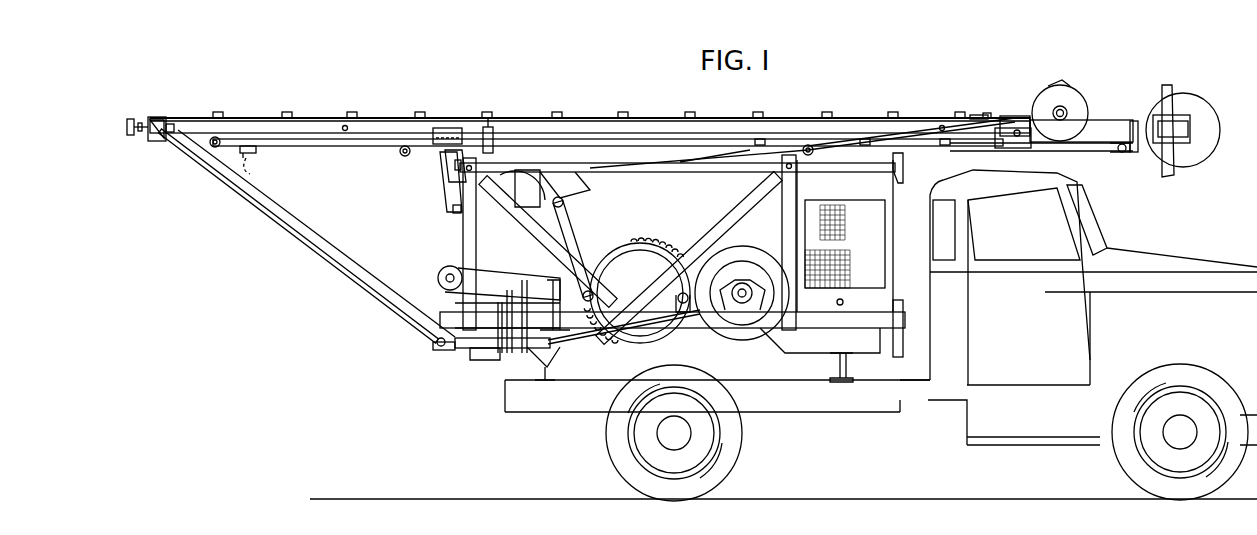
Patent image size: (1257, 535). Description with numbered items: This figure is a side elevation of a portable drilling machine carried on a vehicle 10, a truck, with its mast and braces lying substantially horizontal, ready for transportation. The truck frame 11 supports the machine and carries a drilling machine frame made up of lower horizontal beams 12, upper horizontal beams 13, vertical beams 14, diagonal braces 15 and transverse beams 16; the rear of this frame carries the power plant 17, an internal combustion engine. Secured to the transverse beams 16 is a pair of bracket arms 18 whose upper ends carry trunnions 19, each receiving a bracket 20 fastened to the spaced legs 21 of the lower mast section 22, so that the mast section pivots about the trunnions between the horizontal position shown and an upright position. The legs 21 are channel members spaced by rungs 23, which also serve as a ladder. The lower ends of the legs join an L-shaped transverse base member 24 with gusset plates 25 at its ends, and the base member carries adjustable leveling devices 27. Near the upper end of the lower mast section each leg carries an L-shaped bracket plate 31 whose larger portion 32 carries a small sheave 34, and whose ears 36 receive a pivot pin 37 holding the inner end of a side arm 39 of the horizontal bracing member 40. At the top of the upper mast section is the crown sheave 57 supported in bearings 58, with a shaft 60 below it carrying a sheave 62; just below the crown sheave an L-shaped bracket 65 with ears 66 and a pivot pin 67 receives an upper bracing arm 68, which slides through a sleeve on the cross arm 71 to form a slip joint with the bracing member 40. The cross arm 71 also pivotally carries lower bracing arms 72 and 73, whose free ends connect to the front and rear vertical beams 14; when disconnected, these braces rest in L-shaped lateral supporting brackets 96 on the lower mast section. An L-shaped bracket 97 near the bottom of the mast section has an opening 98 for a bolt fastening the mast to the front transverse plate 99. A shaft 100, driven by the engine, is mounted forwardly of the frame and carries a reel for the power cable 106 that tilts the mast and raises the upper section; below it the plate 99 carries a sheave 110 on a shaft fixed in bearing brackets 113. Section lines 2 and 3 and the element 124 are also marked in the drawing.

The section line 2- 2 is at (420, 282).
The section line 3- 3 is at (402, 350).
The vehicle 10 is at (1160, 258).
The frame 11 is at (880, 377).
The lower horizontal beams 12 is at (690, 328).
The upper horizontal beams 13 is at (672, 173).
The vertical beams 14 is at (475, 238).
The diagonal braces 15 is at (535, 236).
The transverse beams 16 is at (455, 168).
The power plant 17 is at (880, 216).
The bracket arms 18 is at (448, 186).
The trunnions 19 is at (447, 158).
The bracket 20 is at (450, 130).
The legs 21 is at (386, 128).
The lower mast section 22 is at (338, 118).
The rungs 23 is at (561, 112).
The base member 24 is at (149, 138).
The gusset plates 25 is at (160, 118).
The adjustable leveling devices 27 is at (134, 121).
The bracket arm or plate 31 is at (1005, 116).
The portion 32 is at (994, 112).
The small sheave 34 is at (980, 115).
The ears 36 is at (1017, 138).
The pivot pin or bolt 37 is at (1012, 142).
The side arms 39 is at (866, 140).
The horizontal bracing member 40 is at (898, 134).
The crown sheave 57 is at (1210, 118).
The bearings 58 is at (1185, 110).
The shaft 60 is at (1056, 108).
The sheave 62 is at (1070, 96).
The bracket or plate 65 is at (1135, 153).
The ears 66 is at (1120, 153).
The pivot pin 67 is at (1115, 152).
The upper bracing arms 68 is at (1074, 152).
The cross arm 71 is at (810, 145).
The lower bracing arms 72 is at (408, 156).
The lower bracing arms 73 is at (336, 147).
The lateral supporting brackets 96 is at (491, 140).
The L-shaped bracket 97 is at (252, 153).
The opening 98 is at (257, 170).
The front transverse plate 99 is at (432, 341).
The shaft 100 is at (455, 268).
The power cable 106 is at (443, 128).
The sheave 110 is at (452, 352).
The bearing brackets 113 is at (442, 346).
The gusset 124 is at (158, 140).